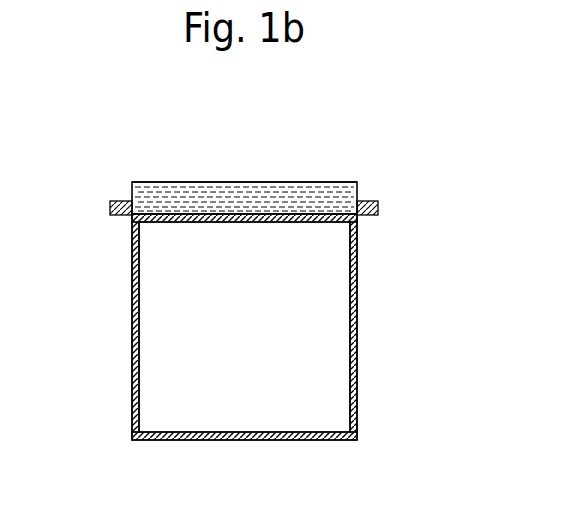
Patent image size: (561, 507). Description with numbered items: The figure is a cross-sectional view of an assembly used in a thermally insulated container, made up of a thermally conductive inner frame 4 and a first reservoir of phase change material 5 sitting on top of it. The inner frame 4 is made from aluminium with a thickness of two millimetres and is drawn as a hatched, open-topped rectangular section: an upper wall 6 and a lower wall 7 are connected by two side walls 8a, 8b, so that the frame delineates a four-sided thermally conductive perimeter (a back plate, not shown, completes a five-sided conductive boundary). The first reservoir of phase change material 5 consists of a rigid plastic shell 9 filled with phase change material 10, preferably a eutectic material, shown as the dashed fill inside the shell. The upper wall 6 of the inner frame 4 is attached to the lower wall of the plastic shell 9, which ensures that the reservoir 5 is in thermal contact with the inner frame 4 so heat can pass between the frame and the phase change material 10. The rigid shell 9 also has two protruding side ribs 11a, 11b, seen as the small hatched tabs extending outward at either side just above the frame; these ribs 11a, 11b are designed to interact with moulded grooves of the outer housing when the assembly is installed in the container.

The thermally conductive inner frame 4 is at (360, 316).
The first reservoir of phase change material 5 is at (174, 177).
The upper wall 6 is at (172, 223).
The lower wall 7 is at (177, 431).
The side wall 8a is at (132, 349).
The side wall 8b is at (357, 403).
The rigid plastic shell 9 is at (322, 182).
The phase change material 10 is at (231, 210).
The protruding side rib 11a is at (122, 201).
The protruding side rib 11b is at (367, 202).